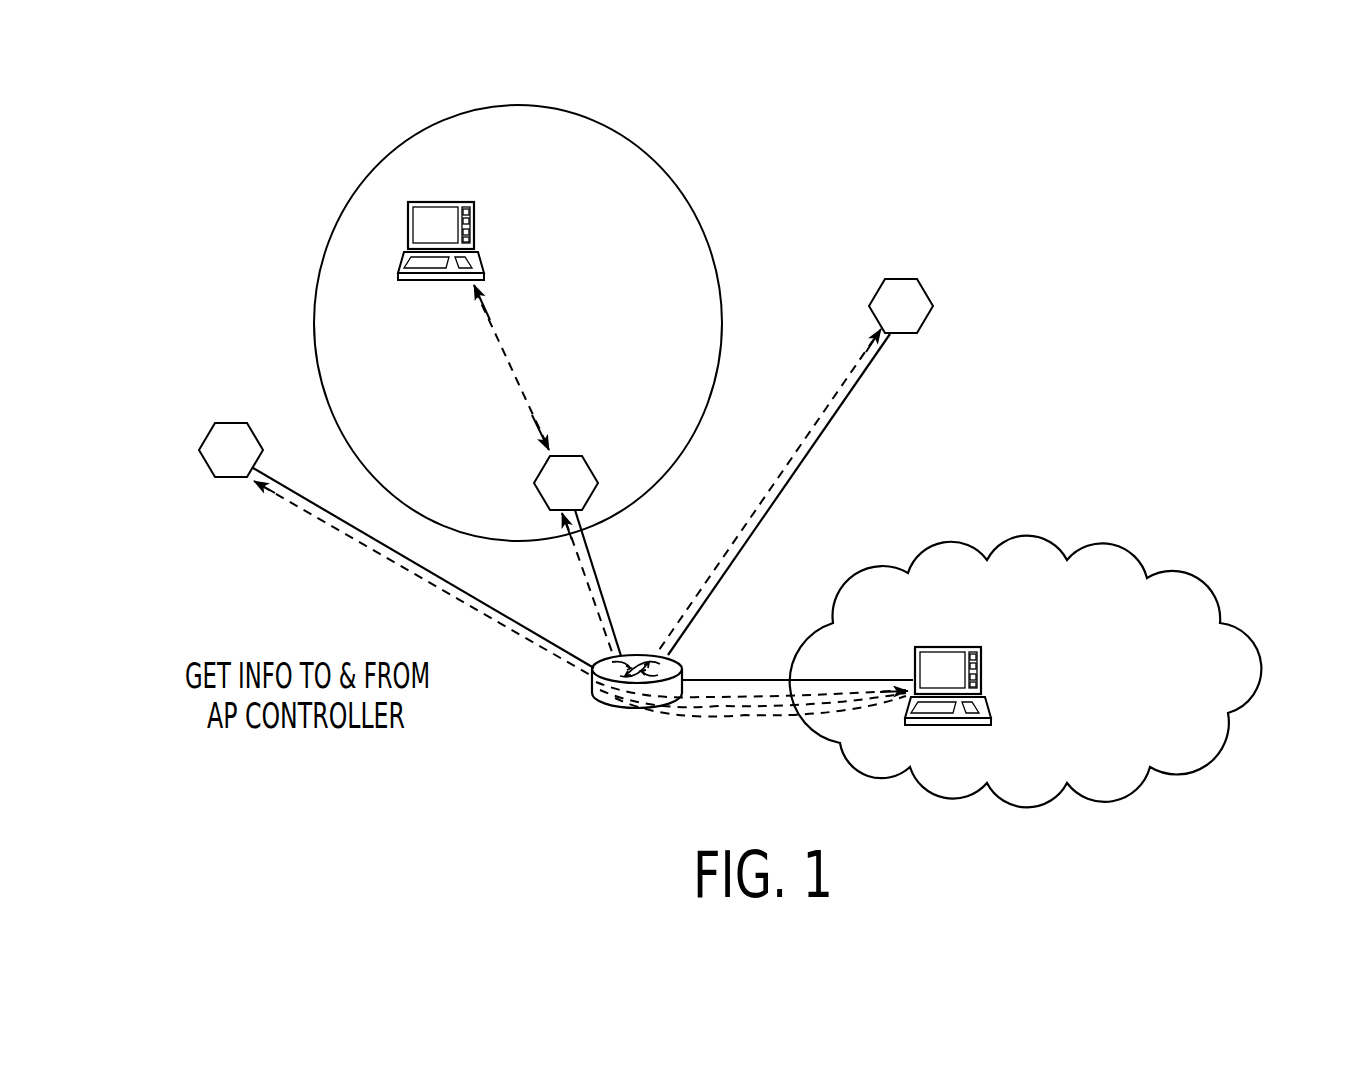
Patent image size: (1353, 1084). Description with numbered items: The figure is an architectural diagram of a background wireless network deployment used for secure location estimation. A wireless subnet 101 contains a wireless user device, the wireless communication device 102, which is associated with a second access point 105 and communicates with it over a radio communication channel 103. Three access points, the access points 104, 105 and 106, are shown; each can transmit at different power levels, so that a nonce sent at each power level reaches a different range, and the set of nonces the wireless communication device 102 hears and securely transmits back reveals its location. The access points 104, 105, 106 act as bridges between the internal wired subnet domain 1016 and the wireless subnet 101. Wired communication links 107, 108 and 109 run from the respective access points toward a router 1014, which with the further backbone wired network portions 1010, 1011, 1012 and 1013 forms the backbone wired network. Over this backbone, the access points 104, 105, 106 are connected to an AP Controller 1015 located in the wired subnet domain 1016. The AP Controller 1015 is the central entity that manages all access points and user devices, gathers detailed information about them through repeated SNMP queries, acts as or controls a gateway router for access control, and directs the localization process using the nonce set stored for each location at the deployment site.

The wireless subnet 101 is at (738, 290).
The wireless communication device 102 is at (482, 250).
The radio communication channel 103 is at (496, 342).
The access point 104 is at (196, 450).
The access point 105 is at (532, 476).
The access point 106 is at (936, 294).
The wired communication link 107 is at (310, 496).
The wired communication link 108 is at (591, 542).
The wired communication link 109 is at (846, 404).
The backbone wired network link 1010 is at (771, 677).
The backbone wired network path 1011 is at (349, 550).
The backbone wired network path 1012 is at (586, 591).
The backbone wired network path 1013 is at (775, 472).
The router 1014 is at (595, 705).
The AP Controller 1015 is at (992, 695).
The wired subnet domain 1016 is at (1222, 589).